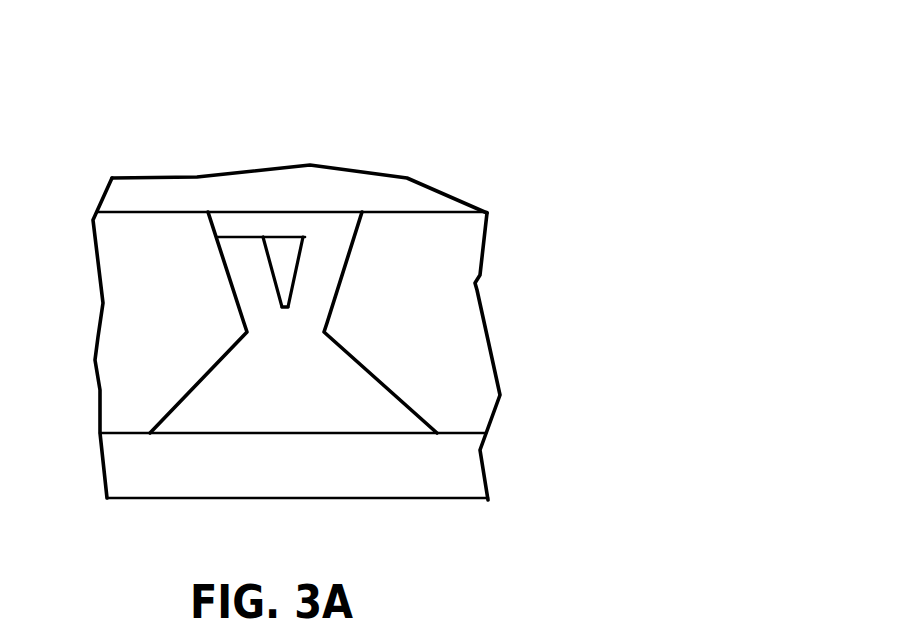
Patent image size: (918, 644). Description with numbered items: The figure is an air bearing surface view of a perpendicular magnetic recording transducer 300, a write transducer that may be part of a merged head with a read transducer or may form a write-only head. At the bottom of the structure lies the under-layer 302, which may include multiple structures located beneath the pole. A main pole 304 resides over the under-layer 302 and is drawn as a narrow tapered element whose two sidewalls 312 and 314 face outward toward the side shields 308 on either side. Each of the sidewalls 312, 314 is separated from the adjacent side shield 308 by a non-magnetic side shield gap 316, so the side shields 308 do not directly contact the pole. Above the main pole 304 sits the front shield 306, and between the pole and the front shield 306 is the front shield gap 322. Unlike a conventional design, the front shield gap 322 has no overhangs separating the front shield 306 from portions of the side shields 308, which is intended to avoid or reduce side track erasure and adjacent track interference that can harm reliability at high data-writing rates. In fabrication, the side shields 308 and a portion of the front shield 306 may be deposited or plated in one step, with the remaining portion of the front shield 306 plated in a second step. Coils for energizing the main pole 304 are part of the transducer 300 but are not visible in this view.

The perpendicular magnetic recording transducer 300 is at (466, 72).
The under-layer 302 is at (294, 465).
The main pole 304 is at (288, 253).
The front shield 306 is at (310, 173).
The side shields 308 is at (172, 332).
The sidewall 312 is at (277, 290).
The sidewall 314 is at (291, 278).
The side shield gaps 316 is at (243, 268).
The front shield gap 322 is at (303, 230).